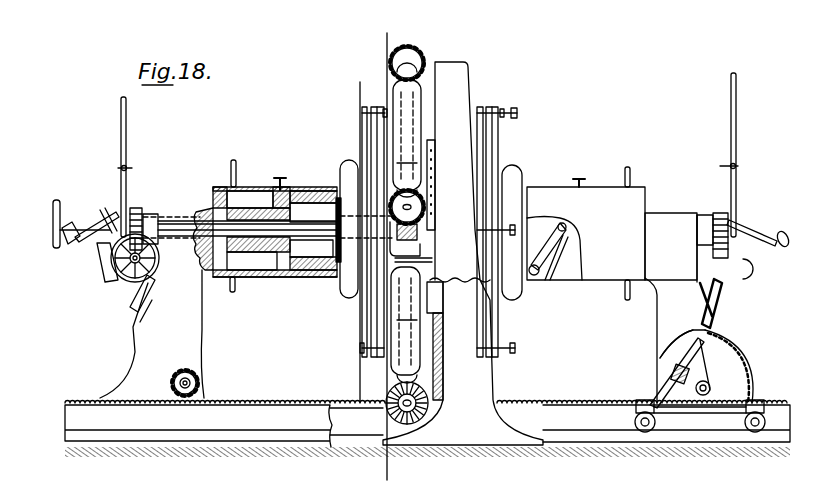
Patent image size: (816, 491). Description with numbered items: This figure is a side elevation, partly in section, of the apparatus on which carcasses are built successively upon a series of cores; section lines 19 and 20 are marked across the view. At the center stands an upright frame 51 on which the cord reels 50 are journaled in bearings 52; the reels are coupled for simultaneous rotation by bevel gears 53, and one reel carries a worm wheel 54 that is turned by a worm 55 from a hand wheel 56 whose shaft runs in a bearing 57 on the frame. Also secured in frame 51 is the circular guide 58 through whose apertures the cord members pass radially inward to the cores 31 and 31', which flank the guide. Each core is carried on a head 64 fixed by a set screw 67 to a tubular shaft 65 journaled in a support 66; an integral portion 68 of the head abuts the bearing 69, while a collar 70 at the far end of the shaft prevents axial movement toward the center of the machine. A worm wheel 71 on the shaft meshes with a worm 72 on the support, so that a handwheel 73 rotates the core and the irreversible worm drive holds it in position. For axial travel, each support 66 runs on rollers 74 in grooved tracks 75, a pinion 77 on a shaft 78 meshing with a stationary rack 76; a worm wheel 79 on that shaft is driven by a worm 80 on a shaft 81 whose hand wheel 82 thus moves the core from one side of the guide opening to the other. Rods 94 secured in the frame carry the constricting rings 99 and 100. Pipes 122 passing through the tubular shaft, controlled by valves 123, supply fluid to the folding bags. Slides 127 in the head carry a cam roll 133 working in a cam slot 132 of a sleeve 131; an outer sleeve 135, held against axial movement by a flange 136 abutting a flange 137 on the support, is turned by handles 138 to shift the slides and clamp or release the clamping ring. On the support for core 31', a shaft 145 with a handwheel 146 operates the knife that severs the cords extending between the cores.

The section line 19- 19 is at (390, 36).
The section line 20- 20 is at (366, 85).
The core 31 is at (528, 220).
The core 31' is at (335, 217).
The reels 50 is at (410, 165).
The upright frame 51 is at (470, 80).
The bearings 52 is at (423, 80).
The bevel gears 53 is at (412, 48).
The worm wheel 54 is at (425, 207).
The worm 55 is at (420, 232).
The hand wheel 56 is at (313, 213).
The bearing 57 is at (422, 252).
The circular guide 58 is at (436, 145).
The head 64 is at (325, 270).
The tubular shaft 65 is at (311, 249).
The support 66 is at (398, 309).
The set screw 67 is at (205, 208).
The integral portion 68 is at (296, 190).
The bearing 69 is at (248, 208).
The collar 70 is at (150, 214).
The worm wheel 71 is at (137, 208).
The worm 72 is at (150, 272).
The handwheel 73 is at (115, 283).
The rollers 74 is at (640, 432).
The grooved tracks 75 is at (427, 426).
The stationary rack 76 is at (262, 403).
The pinion 77 is at (200, 380).
The shaft 78 is at (190, 378).
The worm wheel 79 is at (720, 348).
The worm 80 is at (672, 372).
The shaft 81 is at (130, 308).
The hand wheel 82 is at (102, 210).
The rods 94 is at (515, 112).
The ring 99 is at (372, 143).
The ring 100 is at (368, 130).
The pipes 122 is at (121, 185).
The valves 123 is at (121, 165).
The slides 127 is at (340, 262).
The sleeve 131 is at (298, 270).
The cam slot 132 is at (552, 280).
The cam roll 133 is at (556, 280).
The outer sleeve 135 is at (262, 277).
The flange 136 is at (220, 187).
The flange 137 is at (252, 261).
The handles 138 is at (234, 160).
The shaft 145 is at (108, 262).
The handwheel 146 is at (62, 205).